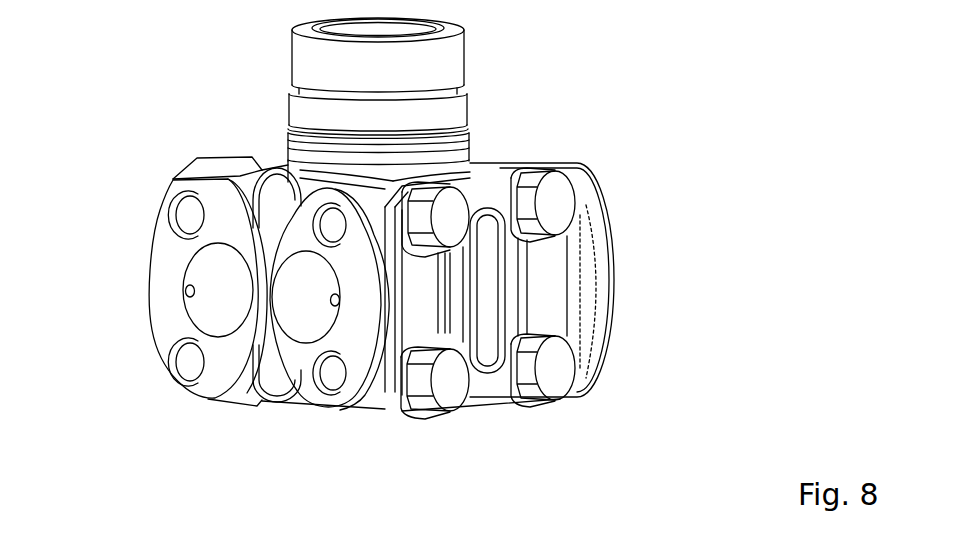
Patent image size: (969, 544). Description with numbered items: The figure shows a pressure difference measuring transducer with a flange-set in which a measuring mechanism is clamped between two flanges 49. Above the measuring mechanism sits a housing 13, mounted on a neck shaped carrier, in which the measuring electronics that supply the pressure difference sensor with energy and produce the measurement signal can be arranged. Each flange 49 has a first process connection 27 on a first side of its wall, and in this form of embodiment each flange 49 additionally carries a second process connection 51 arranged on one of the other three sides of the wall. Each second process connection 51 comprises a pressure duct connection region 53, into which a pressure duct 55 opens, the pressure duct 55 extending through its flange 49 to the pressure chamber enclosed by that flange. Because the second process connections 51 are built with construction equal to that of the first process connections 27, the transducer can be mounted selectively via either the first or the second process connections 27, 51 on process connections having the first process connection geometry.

The housing 13 is at (458, 80).
The first process connection 27 is at (615, 267).
The flange 49 is at (263, 160).
The second process connection 51 is at (165, 260).
The pressure duct connection region 53 is at (233, 305).
The pressure duct 55 is at (185, 292).